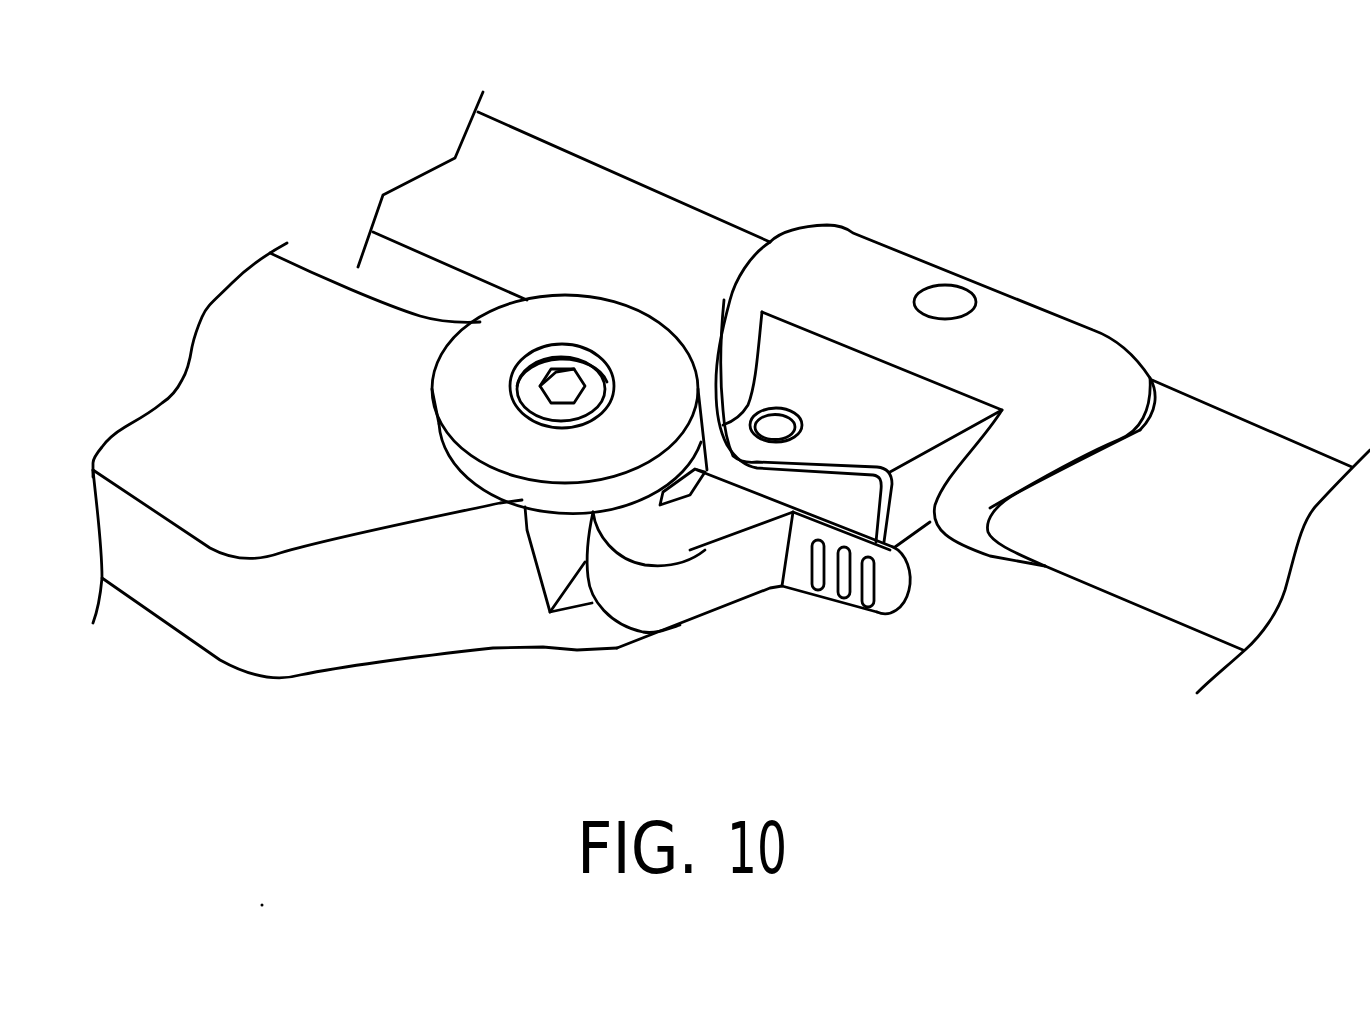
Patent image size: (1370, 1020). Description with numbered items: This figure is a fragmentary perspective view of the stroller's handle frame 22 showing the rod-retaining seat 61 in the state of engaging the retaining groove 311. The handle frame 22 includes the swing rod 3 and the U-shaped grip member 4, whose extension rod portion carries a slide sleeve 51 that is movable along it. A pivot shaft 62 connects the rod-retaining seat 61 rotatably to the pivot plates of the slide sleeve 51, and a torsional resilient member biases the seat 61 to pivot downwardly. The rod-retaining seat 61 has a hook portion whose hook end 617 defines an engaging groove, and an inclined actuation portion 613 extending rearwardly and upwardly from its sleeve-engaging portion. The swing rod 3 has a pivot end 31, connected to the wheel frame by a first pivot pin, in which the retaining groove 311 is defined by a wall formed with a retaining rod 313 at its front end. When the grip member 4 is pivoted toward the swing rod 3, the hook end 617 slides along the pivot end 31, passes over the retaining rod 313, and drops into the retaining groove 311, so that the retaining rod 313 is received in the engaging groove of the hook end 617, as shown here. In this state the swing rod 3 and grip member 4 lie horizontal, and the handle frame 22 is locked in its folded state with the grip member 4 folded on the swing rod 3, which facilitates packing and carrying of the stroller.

The swing rod 3 is at (239, 245).
The handle frame 22 is at (710, 188).
The pivot shaft 62 is at (778, 422).
The slide sleeve 51 is at (1048, 353).
The grip member 4 is at (1230, 452).
The pivot end 31 is at (508, 453).
The retaining groove 311 is at (553, 553).
The hook end 617 is at (598, 615).
The retaining rod 313 is at (680, 478).
The rod-retaining seat 61 is at (752, 602).
The inclined actuation portion 613 is at (877, 583).